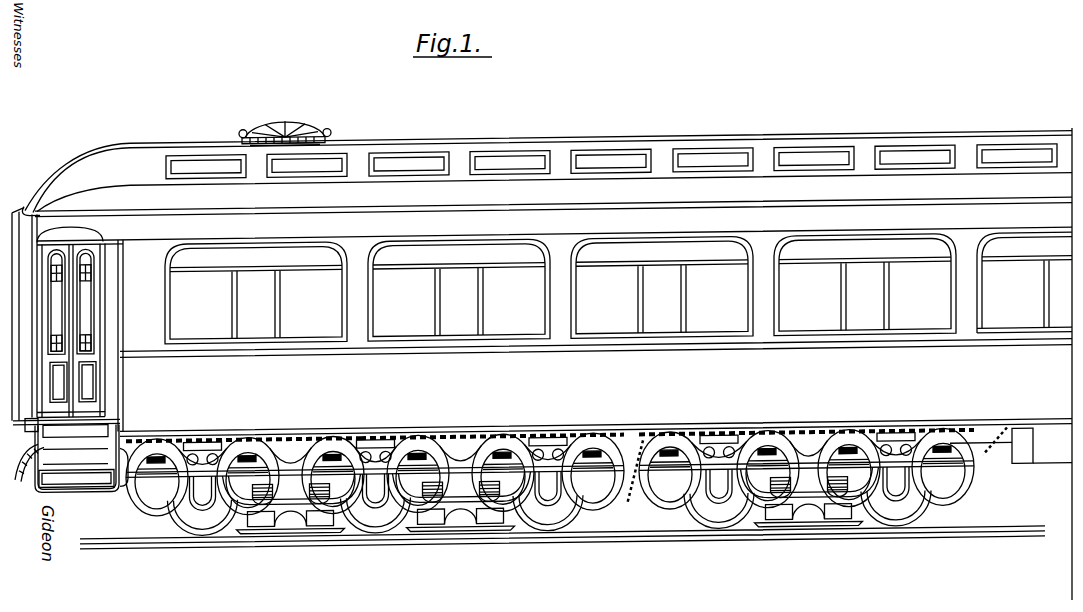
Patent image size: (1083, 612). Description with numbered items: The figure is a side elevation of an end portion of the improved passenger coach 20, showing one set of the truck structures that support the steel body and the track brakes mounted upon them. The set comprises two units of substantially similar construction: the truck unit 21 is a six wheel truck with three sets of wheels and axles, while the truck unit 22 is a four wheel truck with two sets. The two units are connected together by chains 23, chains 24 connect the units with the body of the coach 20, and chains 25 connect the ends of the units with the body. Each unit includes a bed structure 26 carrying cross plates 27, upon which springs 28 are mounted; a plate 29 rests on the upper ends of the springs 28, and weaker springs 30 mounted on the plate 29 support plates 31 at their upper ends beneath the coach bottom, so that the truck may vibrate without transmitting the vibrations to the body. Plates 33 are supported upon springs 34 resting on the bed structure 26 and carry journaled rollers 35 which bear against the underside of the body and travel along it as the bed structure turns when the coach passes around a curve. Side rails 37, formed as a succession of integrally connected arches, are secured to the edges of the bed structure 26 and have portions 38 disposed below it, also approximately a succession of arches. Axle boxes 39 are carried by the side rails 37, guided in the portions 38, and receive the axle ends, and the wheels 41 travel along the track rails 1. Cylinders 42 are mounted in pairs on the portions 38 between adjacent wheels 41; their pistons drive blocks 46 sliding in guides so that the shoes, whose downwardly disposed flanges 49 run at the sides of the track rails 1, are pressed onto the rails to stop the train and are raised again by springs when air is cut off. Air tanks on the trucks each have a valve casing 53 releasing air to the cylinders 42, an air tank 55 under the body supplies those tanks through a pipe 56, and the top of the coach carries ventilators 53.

The track rails 1 is at (137, 550).
The passenger coach 20 is at (542, 312).
The six wheel truck unit 21 is at (373, 482).
The four wheel truck unit 22 is at (811, 477).
The chains 23 is at (632, 485).
The chains 24 is at (630, 454).
The chains 25 is at (131, 435).
The bed structure 26 is at (147, 480).
The cross plates 27 is at (158, 454).
The springs 28 is at (465, 448).
The plate 29 is at (472, 448).
The springs 30 is at (302, 436).
The plates 31 is at (270, 444).
The plates 33 is at (430, 449).
The springs 34 is at (378, 447).
The journaled rollers 35 is at (396, 448).
The side rails 37 is at (583, 450).
The portions of side rails 38 is at (595, 508).
The axle boxes 39 is at (375, 508).
The wheels 41 is at (540, 526).
The cylinders 42 is at (317, 516).
The blocks 46 is at (432, 524).
The flanges 49 is at (320, 536).
The valve casing 53 is at (305, 127).
The air tank 55 is at (1053, 467).
The pipe 56 is at (1003, 466).